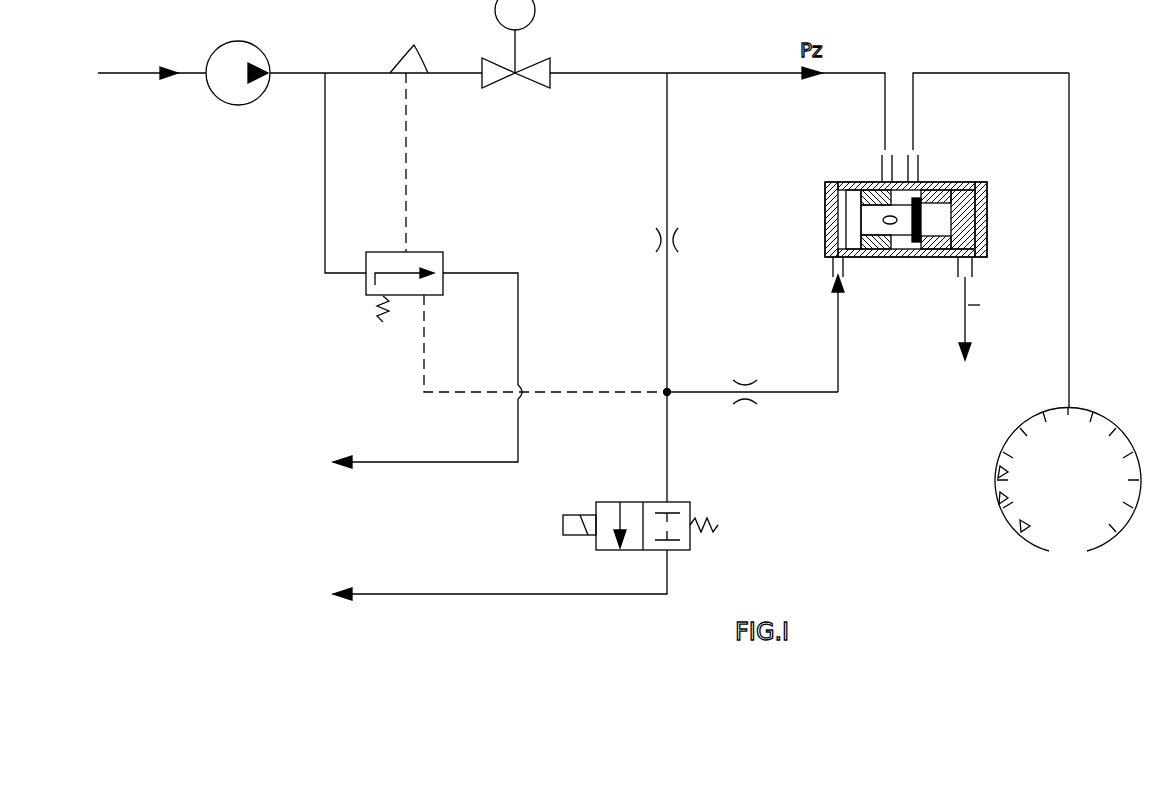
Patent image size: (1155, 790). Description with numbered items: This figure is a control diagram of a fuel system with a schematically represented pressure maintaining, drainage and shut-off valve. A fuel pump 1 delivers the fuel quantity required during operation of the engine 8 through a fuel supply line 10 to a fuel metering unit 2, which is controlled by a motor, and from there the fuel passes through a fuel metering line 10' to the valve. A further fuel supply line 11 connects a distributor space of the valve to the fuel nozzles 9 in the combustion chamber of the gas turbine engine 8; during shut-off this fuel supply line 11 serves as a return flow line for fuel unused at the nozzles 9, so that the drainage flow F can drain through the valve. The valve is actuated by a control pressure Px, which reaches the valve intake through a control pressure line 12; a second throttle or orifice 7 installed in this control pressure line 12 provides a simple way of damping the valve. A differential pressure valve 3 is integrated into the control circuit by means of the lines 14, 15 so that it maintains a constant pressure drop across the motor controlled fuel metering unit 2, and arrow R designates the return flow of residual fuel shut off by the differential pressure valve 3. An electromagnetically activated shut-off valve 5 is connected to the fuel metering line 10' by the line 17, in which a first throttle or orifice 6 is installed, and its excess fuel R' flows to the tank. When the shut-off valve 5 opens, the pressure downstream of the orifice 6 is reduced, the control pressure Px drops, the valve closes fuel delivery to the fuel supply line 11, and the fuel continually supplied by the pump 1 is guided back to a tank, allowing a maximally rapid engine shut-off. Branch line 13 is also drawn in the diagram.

The fuel pump 1 is at (232, 78).
The fuel metering unit 2 is at (492, 68).
The differential pressure valve 3 is at (362, 296).
The electromagnetically activated shut-off valve 5 is at (626, 502).
The first throttle or orifice 6 is at (688, 240).
The second throttle or orifice 7 is at (743, 408).
The combustion chamber or gas turbine engine 8 is at (1095, 550).
The fuel injection means or nozzles 9 is at (1025, 528).
The fuel supply line 10 is at (409, 135).
The fuel metering line 10' is at (740, 46).
The fuel supply line 11 is at (1070, 202).
The control pressure line 12 is at (840, 345).
The supply line 13 is at (325, 155).
The line 14 is at (405, 165).
The line 15 is at (450, 395).
The line 17 is at (668, 352).